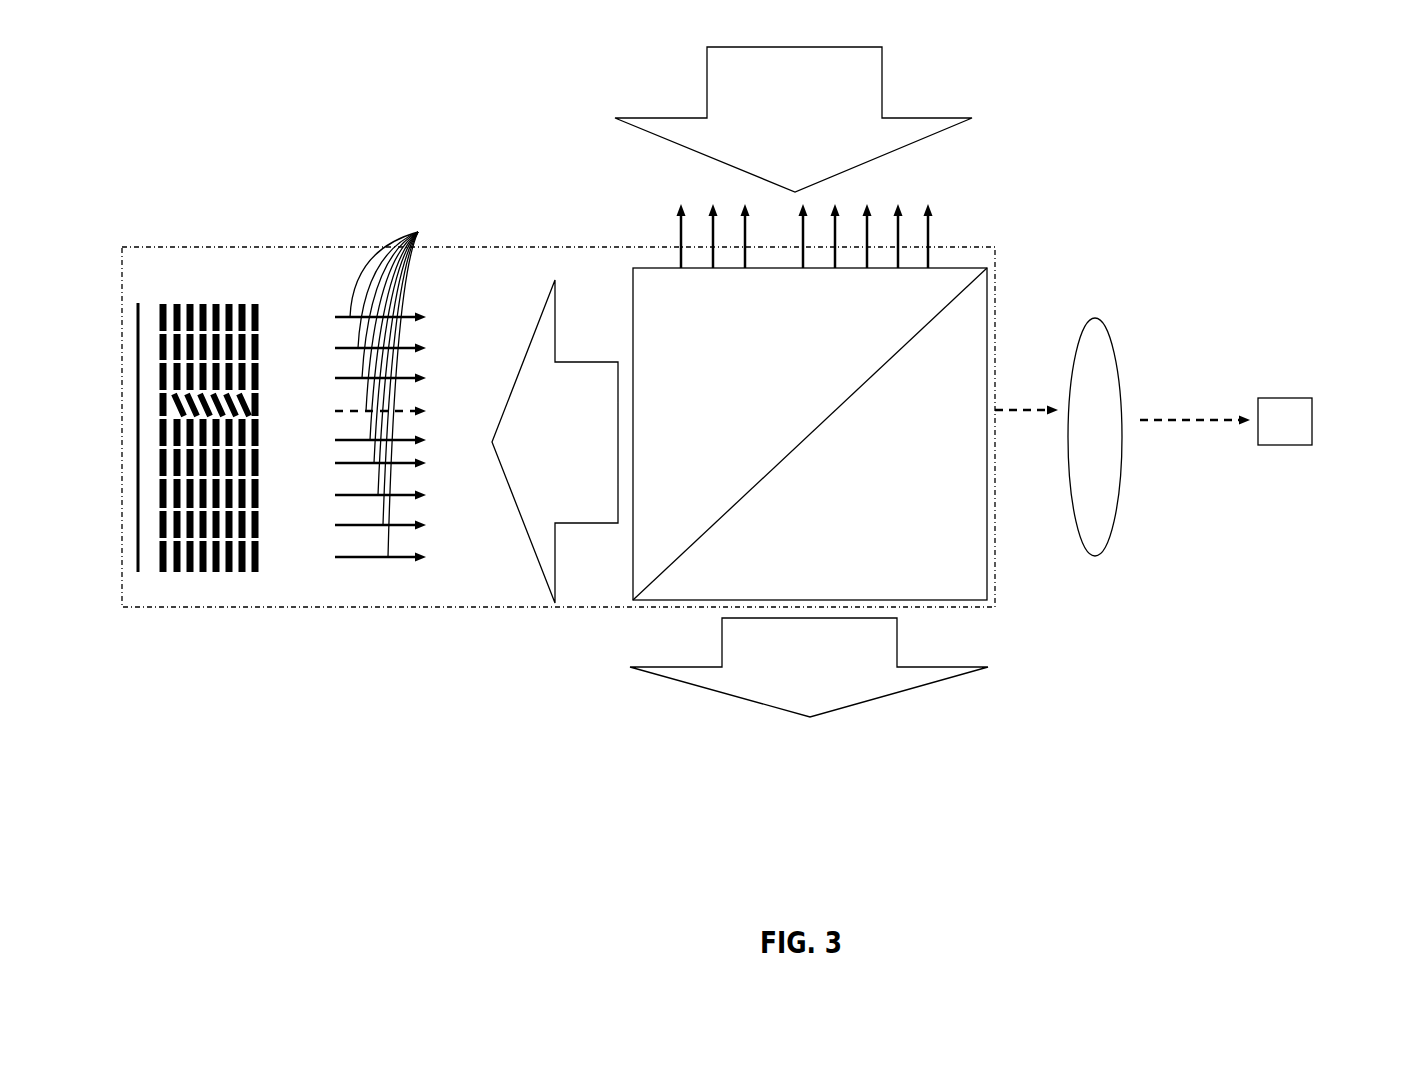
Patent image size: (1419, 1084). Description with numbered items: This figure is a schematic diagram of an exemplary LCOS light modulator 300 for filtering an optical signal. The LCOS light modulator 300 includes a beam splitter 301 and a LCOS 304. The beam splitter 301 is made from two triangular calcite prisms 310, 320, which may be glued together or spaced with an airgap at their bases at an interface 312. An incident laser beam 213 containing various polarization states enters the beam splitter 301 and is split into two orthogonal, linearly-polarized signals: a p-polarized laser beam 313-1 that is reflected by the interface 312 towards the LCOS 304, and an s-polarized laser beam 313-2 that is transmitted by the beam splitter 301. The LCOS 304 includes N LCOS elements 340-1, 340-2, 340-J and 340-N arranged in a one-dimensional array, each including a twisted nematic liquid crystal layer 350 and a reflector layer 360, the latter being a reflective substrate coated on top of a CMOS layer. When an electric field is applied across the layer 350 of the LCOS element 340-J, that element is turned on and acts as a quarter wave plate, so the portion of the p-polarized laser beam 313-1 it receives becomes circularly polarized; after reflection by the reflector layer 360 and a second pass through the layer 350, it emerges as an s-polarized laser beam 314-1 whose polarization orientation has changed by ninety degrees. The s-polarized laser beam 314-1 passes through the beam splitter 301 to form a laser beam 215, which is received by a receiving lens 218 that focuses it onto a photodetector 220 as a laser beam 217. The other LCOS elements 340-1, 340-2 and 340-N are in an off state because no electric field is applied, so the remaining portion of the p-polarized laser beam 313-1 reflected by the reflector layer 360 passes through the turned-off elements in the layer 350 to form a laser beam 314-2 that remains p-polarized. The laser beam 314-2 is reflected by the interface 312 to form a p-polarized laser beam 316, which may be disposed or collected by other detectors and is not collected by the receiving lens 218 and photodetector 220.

The laser beam 213 is at (793, 119).
The LCOS light modulator 300 is at (574, 599).
The beam splitter 301 is at (851, 399).
The LCOS 304 is at (240, 445).
The prism 310 is at (810, 434).
The interface 312 is at (783, 458).
The p-polarized laser beam 313-1 is at (555, 441).
The s-polarized laser beam 313-2 is at (809, 667).
The s-polarized laser beam 314-1 is at (428, 411).
The laser beam 314-2 is at (408, 363).
The p-polarized laser beam 316 is at (928, 275).
The prism 320 is at (920, 560).
The LCOS element 340-1 is at (262, 318).
The LCOS element 340-2 is at (262, 345).
The LCOS element 340-J is at (258, 412).
The LCOS element 340-N is at (260, 558).
The twisted nematic liquid crystal layer 350 is at (253, 473).
The reflector layer 360 is at (137, 303).
The laser beam 215 is at (1010, 408).
The laser beam 217 is at (1173, 413).
The receiving lens 218 is at (1100, 315).
The photodetector 220 is at (1296, 398).